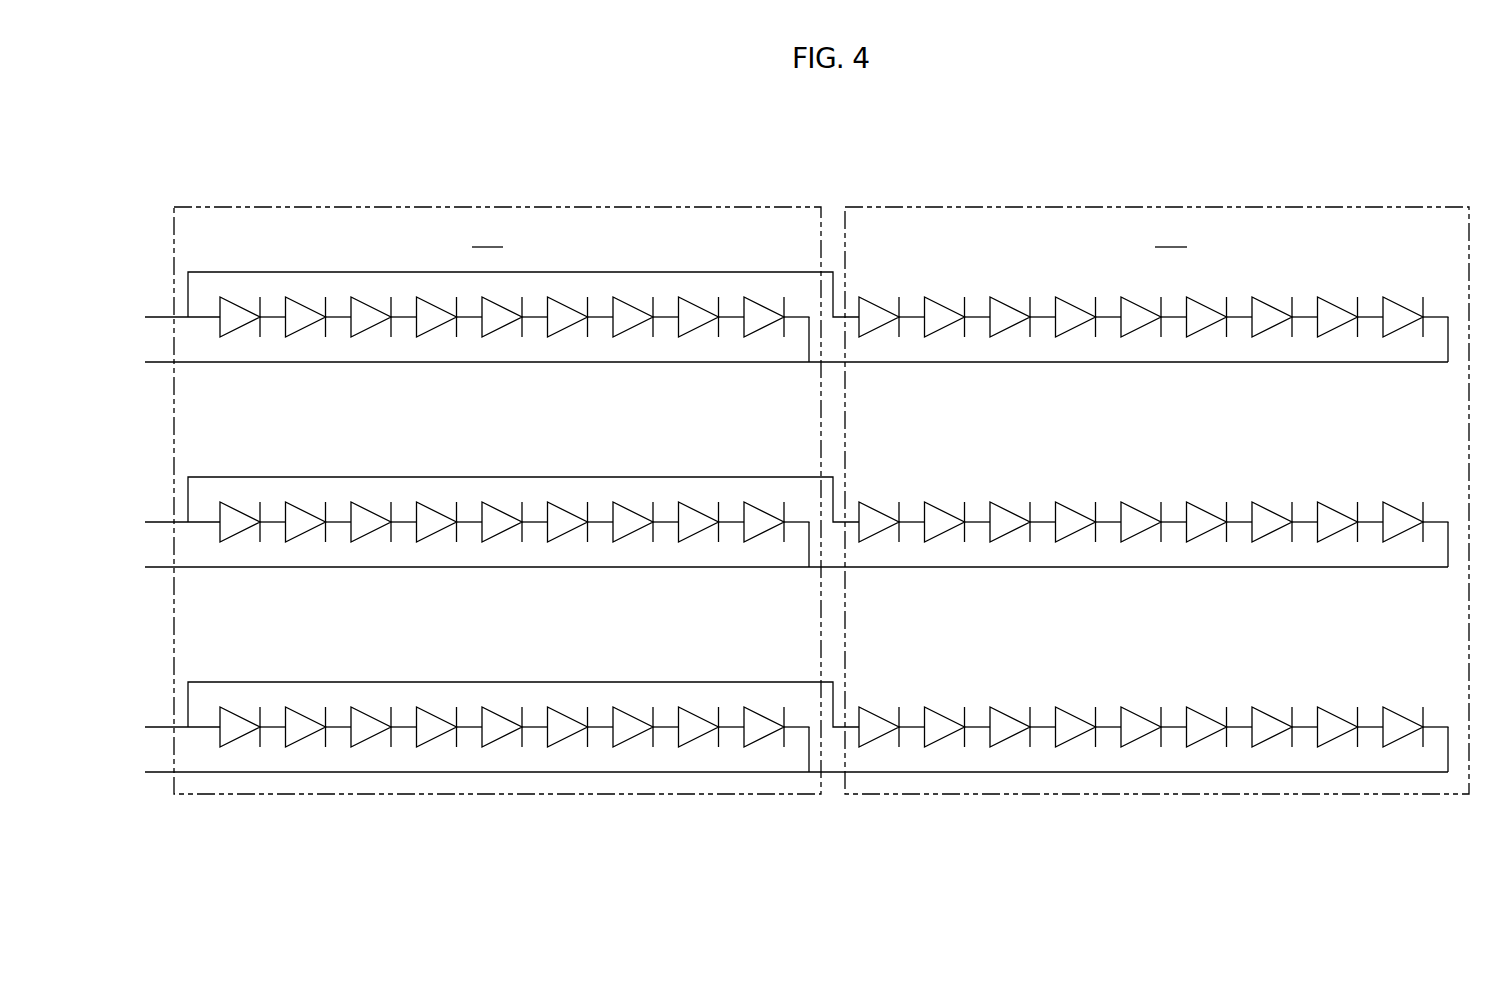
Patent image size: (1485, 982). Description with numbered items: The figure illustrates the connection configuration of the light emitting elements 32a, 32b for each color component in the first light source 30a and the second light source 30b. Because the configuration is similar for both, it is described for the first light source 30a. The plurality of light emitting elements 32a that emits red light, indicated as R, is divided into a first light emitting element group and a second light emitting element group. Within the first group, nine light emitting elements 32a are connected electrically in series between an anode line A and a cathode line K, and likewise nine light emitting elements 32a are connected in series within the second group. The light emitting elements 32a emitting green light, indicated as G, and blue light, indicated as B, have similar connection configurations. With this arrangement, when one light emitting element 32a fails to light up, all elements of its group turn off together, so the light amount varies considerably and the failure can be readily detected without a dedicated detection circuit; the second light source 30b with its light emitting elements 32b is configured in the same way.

The first light source 30a is at (783, 495).
The second light source 30b is at (809, 451).
The light emitting element 32a is at (515, 795).
The light emitting element 32b is at (367, 730).